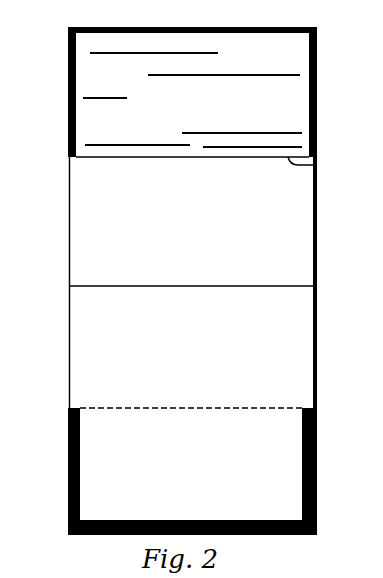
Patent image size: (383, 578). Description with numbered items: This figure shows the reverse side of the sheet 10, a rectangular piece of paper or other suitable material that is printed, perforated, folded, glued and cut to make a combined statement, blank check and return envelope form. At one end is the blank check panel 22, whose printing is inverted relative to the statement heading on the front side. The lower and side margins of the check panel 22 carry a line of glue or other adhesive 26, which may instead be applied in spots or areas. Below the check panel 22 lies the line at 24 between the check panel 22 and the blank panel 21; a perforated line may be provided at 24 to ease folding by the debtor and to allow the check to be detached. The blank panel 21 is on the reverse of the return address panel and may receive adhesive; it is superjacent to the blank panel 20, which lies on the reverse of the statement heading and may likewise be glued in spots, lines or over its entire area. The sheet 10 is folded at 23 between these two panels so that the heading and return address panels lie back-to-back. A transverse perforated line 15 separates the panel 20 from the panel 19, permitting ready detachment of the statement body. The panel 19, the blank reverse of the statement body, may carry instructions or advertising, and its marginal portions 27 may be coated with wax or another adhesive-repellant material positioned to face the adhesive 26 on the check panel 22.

The sheet 10 is at (68, 62).
The blank check panel 22 is at (94, 120).
The line of glue or adhesive 26 is at (316, 77).
The perforated line 24 is at (318, 165).
The blank panel 21 is at (296, 235).
The fold line 23 is at (82, 287).
The blank panel or section 20 is at (290, 358).
The transverse perforated line 15 is at (101, 407).
The reverse side or panel 19 is at (95, 455).
The marginal portions 27 is at (70, 503).